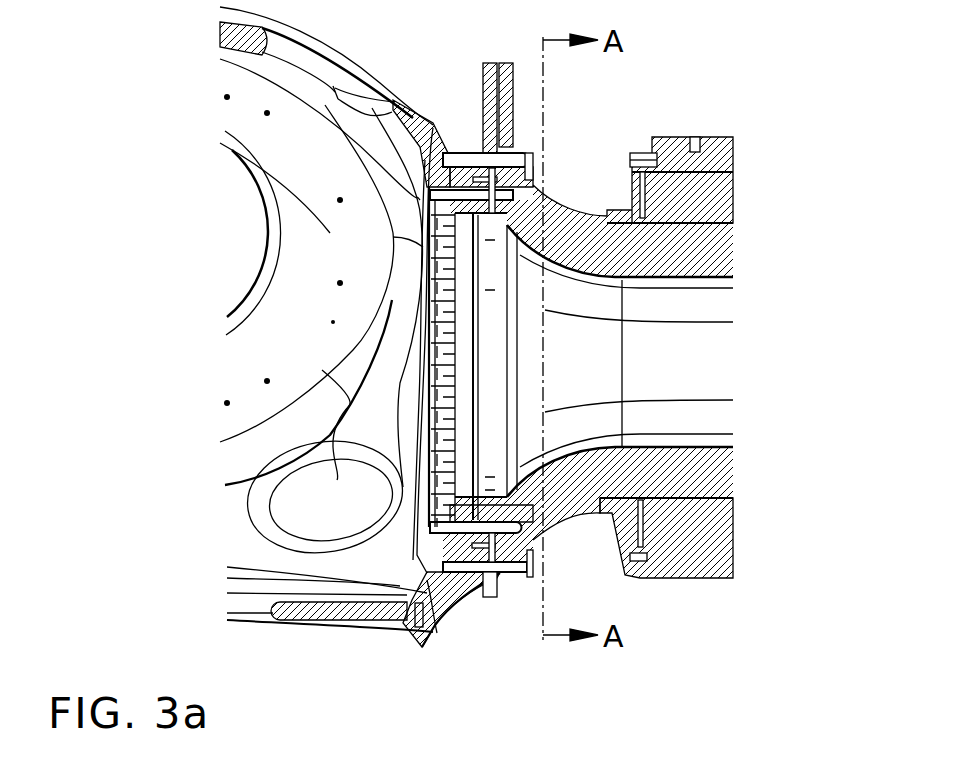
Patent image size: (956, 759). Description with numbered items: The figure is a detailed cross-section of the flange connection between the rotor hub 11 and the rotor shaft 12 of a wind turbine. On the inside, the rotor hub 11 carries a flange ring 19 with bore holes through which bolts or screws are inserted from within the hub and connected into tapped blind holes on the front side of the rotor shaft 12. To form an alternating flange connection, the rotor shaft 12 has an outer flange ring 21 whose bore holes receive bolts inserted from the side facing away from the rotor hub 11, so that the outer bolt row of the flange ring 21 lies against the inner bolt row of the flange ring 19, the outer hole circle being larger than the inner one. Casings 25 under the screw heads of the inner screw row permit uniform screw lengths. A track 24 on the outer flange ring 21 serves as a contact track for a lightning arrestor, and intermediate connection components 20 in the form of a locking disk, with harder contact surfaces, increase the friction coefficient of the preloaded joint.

The rotor hub 11 is at (417, 112).
The rotor shaft 12 is at (678, 140).
The flange ring 19 is at (447, 163).
The intermediate connection components 20 is at (489, 66).
The flange ring 21 is at (533, 178).
The track 24 is at (503, 152).
The casings 25 is at (440, 390).